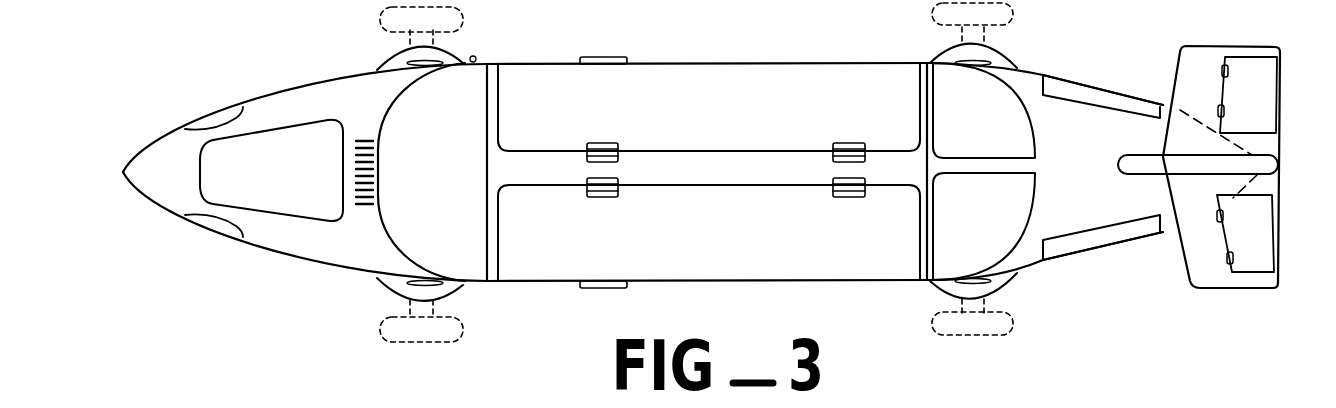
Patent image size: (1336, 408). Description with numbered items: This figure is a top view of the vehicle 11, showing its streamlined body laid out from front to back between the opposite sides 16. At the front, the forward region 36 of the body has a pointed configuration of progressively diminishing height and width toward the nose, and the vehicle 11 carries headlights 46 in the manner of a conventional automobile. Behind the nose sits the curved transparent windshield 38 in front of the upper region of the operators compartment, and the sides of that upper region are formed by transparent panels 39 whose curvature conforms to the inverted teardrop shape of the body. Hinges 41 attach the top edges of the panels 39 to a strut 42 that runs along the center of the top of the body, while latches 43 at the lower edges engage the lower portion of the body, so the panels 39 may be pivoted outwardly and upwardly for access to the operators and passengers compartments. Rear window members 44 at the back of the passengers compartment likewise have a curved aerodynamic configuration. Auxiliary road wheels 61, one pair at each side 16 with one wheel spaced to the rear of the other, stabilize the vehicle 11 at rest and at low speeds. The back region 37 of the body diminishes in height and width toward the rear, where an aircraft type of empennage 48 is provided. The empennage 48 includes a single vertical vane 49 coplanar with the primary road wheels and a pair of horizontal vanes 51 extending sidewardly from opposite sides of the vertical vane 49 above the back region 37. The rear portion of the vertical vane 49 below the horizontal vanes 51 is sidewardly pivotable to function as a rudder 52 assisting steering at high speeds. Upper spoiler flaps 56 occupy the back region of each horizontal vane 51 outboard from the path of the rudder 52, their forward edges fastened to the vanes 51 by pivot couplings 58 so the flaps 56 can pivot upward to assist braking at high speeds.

The vehicle 11 is at (180, 90).
The opposite sides of the vehicle 16 is at (716, 62).
The forward region of body 36 is at (250, 272).
The back region of body 37 is at (1110, 257).
The curved transparent windshield 38 is at (420, 153).
The transparent panels 39 is at (752, 118).
The hinges 41 is at (603, 140).
The strut 42 is at (752, 185).
The latches 43 is at (583, 55).
The rear window members 44 is at (995, 137).
The headlights 46 is at (237, 113).
The empennage 48 is at (1143, 143).
The vertical vane 49 is at (1118, 162).
The horizontal vanes 51 is at (1182, 62).
The rudder 52 is at (1222, 157).
The upper spoiler flaps 56 is at (1230, 105).
The pivot couplings 58 is at (1222, 72).
The auxiliary road wheels 61 is at (380, 63).